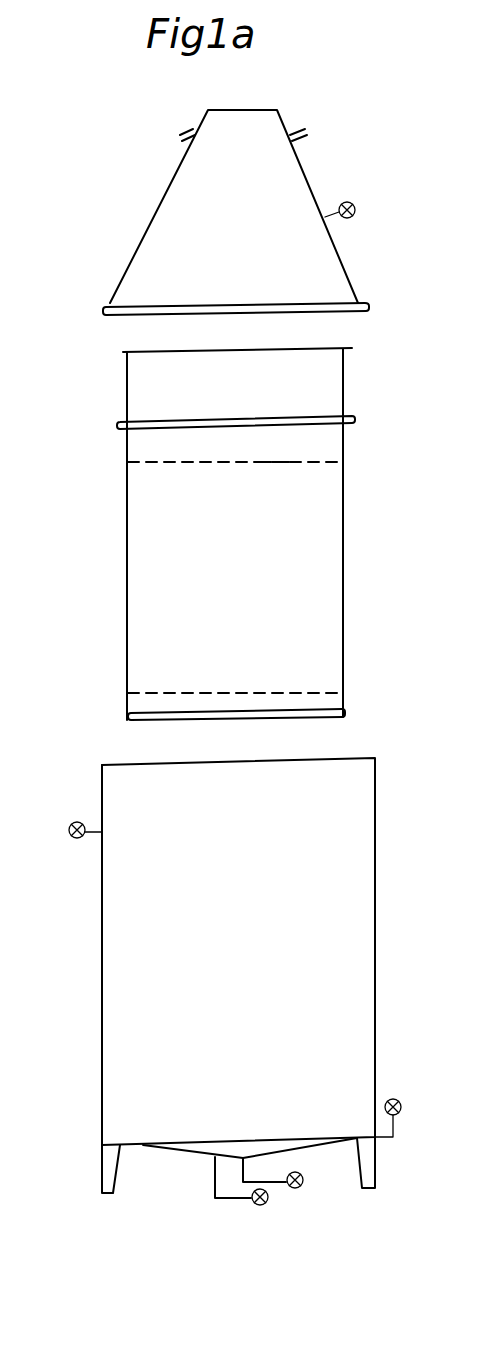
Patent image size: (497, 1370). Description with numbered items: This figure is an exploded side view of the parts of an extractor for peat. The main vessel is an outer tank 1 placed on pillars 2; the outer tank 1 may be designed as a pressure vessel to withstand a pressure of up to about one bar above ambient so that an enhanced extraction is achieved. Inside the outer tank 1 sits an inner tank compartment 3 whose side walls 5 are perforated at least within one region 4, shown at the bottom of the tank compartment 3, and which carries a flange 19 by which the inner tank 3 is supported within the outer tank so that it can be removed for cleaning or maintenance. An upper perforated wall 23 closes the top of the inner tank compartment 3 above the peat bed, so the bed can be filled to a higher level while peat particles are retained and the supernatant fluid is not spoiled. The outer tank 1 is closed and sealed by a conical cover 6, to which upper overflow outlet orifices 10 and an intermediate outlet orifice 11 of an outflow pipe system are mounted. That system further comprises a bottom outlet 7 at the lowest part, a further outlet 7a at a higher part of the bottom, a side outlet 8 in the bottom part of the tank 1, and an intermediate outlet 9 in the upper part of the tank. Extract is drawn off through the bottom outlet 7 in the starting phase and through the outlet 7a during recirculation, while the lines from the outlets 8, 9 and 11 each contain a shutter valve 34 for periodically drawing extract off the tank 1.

The outer tank 1 is at (245, 878).
The pillars 2 is at (110, 1167).
The inner tank compartment 3 is at (248, 522).
The perforated region 4 is at (345, 459).
The side walls 5 is at (135, 593).
The cover 6 is at (162, 235).
The bottom outlet 7 is at (244, 1160).
The further outlet 7a is at (215, 1157).
The side outlet 8 is at (376, 1137).
The intermediate outlet 9 is at (102, 828).
The upper overflow outlet orifices 10 is at (296, 128).
The intermediate outlet orifice 11 is at (325, 217).
The flange 19 is at (355, 418).
The upper perforated wall 23 is at (280, 462).
The shutter valve 34 is at (72, 842).